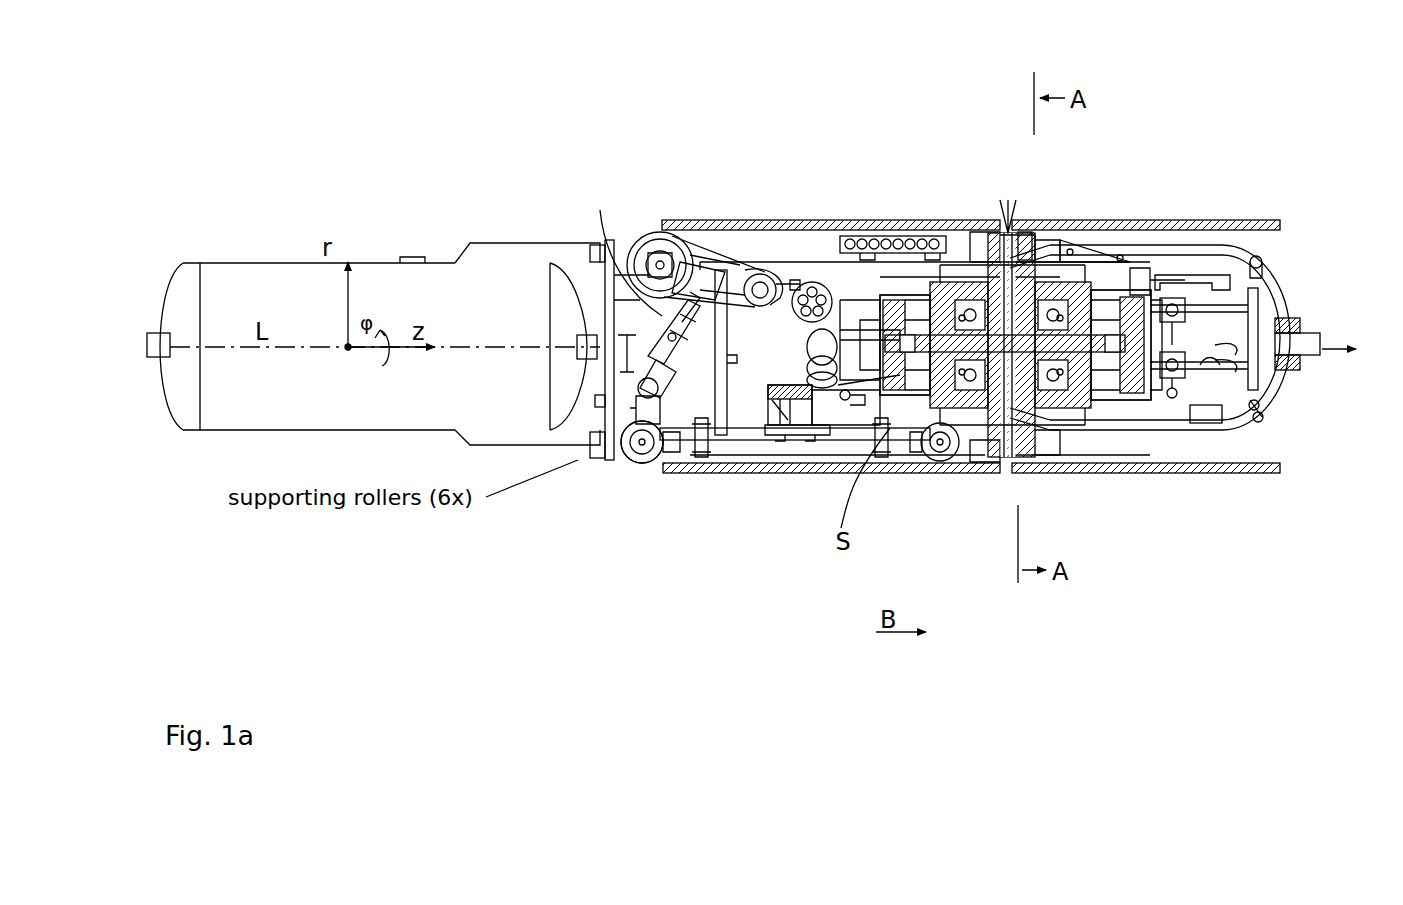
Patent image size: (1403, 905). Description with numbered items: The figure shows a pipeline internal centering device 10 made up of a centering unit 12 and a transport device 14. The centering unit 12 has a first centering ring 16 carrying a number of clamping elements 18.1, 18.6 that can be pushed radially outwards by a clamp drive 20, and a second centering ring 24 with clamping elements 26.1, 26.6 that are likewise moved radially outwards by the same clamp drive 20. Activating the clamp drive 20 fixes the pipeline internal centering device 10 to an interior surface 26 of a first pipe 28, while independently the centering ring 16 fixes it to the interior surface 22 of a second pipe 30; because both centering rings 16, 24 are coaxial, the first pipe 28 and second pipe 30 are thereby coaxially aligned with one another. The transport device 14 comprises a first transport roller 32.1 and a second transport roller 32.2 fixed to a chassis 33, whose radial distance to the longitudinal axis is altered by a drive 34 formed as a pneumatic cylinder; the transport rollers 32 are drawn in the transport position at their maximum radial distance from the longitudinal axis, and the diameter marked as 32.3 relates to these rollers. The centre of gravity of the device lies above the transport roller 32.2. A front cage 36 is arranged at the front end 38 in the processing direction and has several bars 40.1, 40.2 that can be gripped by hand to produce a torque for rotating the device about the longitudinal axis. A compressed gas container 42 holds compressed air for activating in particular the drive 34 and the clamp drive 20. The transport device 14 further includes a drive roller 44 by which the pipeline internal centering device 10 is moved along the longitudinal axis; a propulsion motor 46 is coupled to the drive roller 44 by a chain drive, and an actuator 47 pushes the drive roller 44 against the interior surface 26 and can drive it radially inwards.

The pipeline internal centering device 10 is at (1140, 103).
The centering unit 12 is at (1008, 200).
The transport device 14 is at (597, 475).
The first centering ring 16 is at (1023, 212).
The clamping element 18.1 is at (1035, 218).
The clamping element 18.6 is at (1033, 475).
The clamp drive 20 is at (1155, 220).
The interior surface of the second pipe 22 is at (1225, 220).
The second centering ring 24 is at (993, 205).
The interior surface of the first pipe 26 is at (835, 232).
The clamping element 26.1 is at (985, 222).
The clamping element 26.6 is at (985, 475).
The first pipe 28 is at (700, 222).
The second pipe 30 is at (1128, 220).
The transport rollers 32 is at (631, 291).
The first transport roller 32.1 is at (641, 463).
The second transport roller 32.2 is at (935, 462).
The roller diameter 32.3 is at (640, 447).
The chassis 33 is at (880, 425).
The drive 34 is at (770, 430).
The front cage 36 is at (1258, 270).
The front end 38 is at (1305, 296).
The bar 40.1 is at (1265, 222).
The bar 40.2 is at (1195, 432).
The compressed gas container 42 is at (373, 343).
The drive roller 44 is at (640, 240).
The propulsion motor 46 is at (762, 252).
The actuator 47 is at (590, 263).